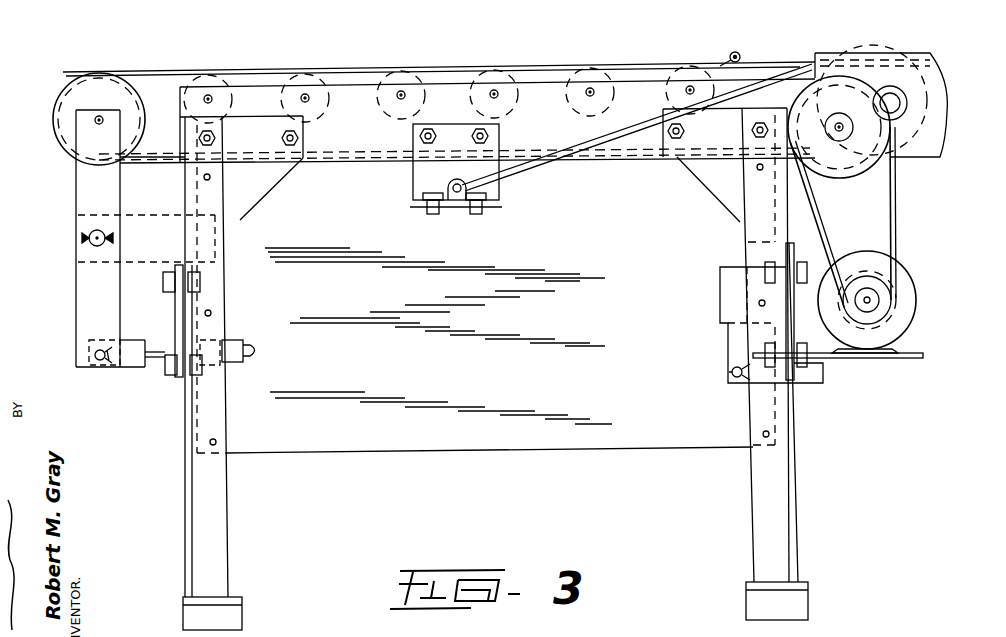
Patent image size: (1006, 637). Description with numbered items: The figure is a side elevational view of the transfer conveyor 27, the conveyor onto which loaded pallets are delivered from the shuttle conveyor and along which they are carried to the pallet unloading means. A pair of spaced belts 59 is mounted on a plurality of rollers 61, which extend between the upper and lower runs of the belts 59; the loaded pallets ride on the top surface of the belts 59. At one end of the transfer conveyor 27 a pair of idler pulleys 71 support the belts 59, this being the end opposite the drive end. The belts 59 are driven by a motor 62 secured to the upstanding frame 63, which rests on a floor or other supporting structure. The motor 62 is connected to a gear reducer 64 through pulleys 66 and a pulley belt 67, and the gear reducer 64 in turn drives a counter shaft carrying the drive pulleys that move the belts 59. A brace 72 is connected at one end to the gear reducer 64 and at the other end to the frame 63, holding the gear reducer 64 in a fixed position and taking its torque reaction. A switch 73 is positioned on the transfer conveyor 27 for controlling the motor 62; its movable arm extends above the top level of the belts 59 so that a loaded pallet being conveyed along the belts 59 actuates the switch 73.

The transfer conveyor 27 is at (92, 72).
The belts 59 is at (563, 66).
The rollers 61 is at (210, 76).
The motor 62 is at (900, 326).
The upstanding frame 63 is at (790, 400).
The gear reducer 64 is at (940, 157).
The pulleys 66 is at (830, 175).
The pulley belt 67 is at (895, 216).
The idler pulleys 71 is at (62, 96).
The brace 72 is at (523, 171).
The switch 73 is at (743, 53).